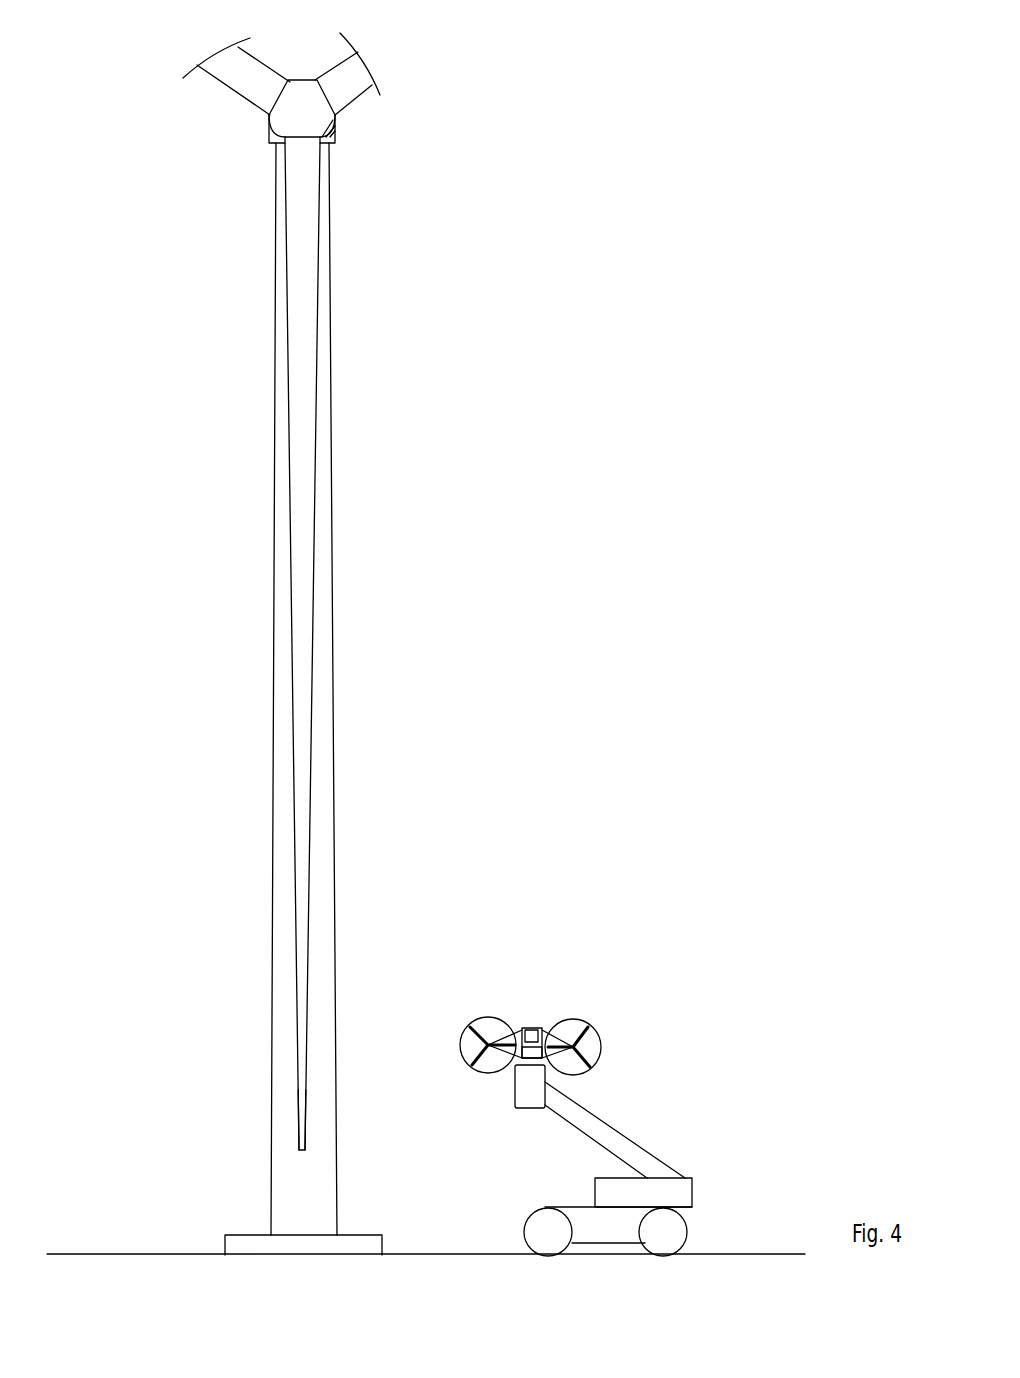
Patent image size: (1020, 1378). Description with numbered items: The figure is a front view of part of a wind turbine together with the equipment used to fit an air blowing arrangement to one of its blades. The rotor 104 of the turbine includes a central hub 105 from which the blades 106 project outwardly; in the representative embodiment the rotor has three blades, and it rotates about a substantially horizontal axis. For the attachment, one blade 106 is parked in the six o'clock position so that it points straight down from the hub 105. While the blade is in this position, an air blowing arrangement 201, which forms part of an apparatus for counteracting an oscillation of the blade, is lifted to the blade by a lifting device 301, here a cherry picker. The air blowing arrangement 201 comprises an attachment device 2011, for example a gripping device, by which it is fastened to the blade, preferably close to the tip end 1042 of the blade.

The rotor 104 is at (272, 970).
The inner tower segment lower end 1042 is at (300, 1150).
The central hub 105 is at (335, 140).
The blade 106 is at (312, 692).
The air blowing arrangement 201 is at (546, 1011).
The attachment device 2011 is at (522, 1033).
The lifting device 301 is at (692, 1178).